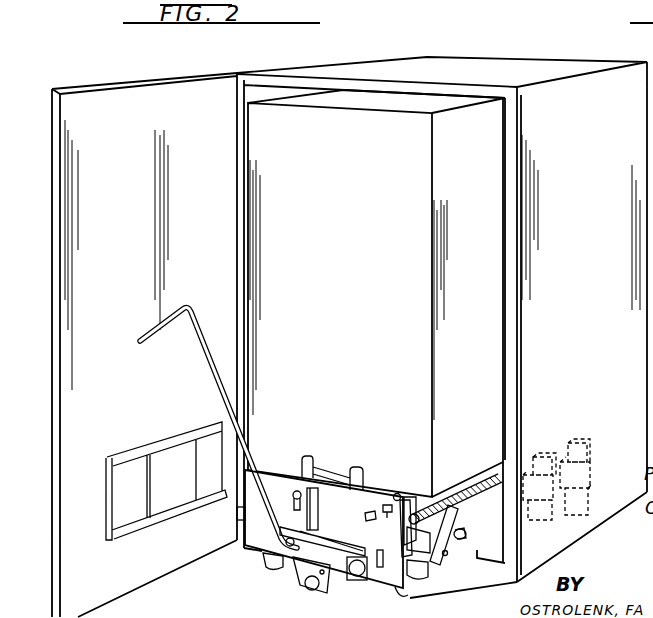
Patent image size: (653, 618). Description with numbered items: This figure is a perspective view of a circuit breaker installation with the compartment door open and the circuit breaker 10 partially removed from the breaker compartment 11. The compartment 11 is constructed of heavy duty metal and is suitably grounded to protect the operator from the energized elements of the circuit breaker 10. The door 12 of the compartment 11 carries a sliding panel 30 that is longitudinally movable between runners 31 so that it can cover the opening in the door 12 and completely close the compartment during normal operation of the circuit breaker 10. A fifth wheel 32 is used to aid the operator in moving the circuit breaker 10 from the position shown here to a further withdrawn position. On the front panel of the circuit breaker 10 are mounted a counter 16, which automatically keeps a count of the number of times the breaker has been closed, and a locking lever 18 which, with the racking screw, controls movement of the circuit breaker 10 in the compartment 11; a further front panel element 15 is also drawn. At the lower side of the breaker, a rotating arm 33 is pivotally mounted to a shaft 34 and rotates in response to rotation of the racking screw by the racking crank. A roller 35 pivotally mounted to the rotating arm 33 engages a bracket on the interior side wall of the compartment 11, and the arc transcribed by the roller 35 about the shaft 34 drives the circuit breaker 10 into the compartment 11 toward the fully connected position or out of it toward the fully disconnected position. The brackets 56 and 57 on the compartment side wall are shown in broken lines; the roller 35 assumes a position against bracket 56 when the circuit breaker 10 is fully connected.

The circuit breaker 10 is at (348, 300).
The breaker compartment 11 is at (600, 300).
The door 12 is at (280, 483).
The stud 15 is at (368, 515).
The counter 16 is at (387, 514).
The locking lever 18 is at (411, 499).
The sliding panel 30 is at (182, 489).
The runners 31 is at (209, 436).
The fifth wheel 32 is at (205, 370).
The rotating arm 33 is at (450, 560).
The shaft 34 is at (444, 562).
The roller 35 is at (465, 531).
The bracket 56 is at (580, 447).
The bracket 57 is at (543, 452).